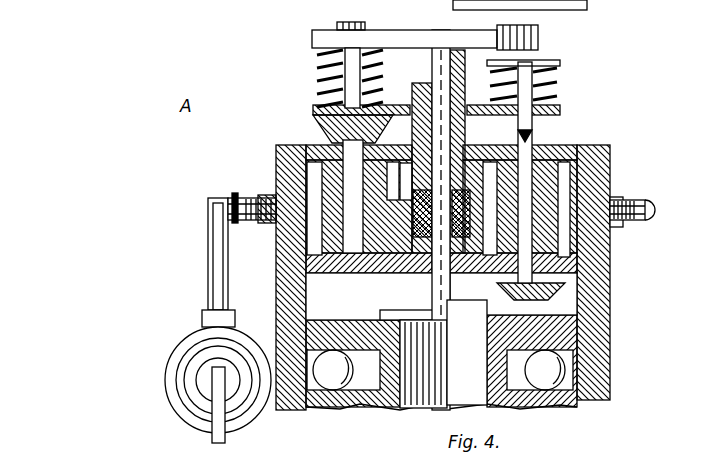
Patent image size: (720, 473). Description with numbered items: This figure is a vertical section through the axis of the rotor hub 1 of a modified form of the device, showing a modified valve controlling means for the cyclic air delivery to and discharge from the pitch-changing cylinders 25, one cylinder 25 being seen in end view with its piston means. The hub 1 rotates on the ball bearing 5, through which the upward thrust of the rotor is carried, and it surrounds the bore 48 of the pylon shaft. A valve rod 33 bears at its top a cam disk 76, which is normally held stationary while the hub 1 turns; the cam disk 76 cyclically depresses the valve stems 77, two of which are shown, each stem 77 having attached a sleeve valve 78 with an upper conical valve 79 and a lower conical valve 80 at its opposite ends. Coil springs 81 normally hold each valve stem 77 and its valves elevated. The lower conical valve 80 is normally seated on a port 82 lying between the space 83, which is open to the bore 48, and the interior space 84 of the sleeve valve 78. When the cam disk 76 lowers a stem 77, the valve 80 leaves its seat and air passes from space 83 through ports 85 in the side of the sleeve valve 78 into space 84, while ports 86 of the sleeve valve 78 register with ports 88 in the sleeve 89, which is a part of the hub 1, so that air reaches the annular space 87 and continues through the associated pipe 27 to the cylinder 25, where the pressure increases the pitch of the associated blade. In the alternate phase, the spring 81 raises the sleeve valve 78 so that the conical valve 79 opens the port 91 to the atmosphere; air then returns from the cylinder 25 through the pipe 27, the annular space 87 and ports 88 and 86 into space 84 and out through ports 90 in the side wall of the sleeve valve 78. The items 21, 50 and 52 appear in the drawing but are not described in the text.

The rotor hub 1 is at (281, 287).
The ball bearing 5 is at (350, 366).
The shaft 21 is at (212, 402).
The cylinder 25 is at (194, 336).
The pipe 27 is at (216, 196).
The valve rod 33 is at (426, 410).
The bore of pylon shaft 48 is at (443, 220).
The member 50 is at (611, 12).
The member 52 is at (651, 9).
The cam disk 76 is at (440, 16).
The valve stem 77 is at (345, 52).
The sleeve valve 78 is at (325, 137).
The upper conical valve 79 is at (372, 120).
The lower conical valve 80 is at (383, 274).
The coil spring 81 is at (377, 73).
The port 82 is at (560, 262).
The space 83 is at (585, 312).
The interior space of sleeve valve 84 is at (350, 275).
The port 85 is at (490, 281).
The port 86 is at (590, 176).
The annular space 87 is at (283, 162).
The port 88 is at (615, 198).
The sleeve 89 is at (312, 234).
The port 90 is at (322, 146).
The port 91 is at (374, 138).